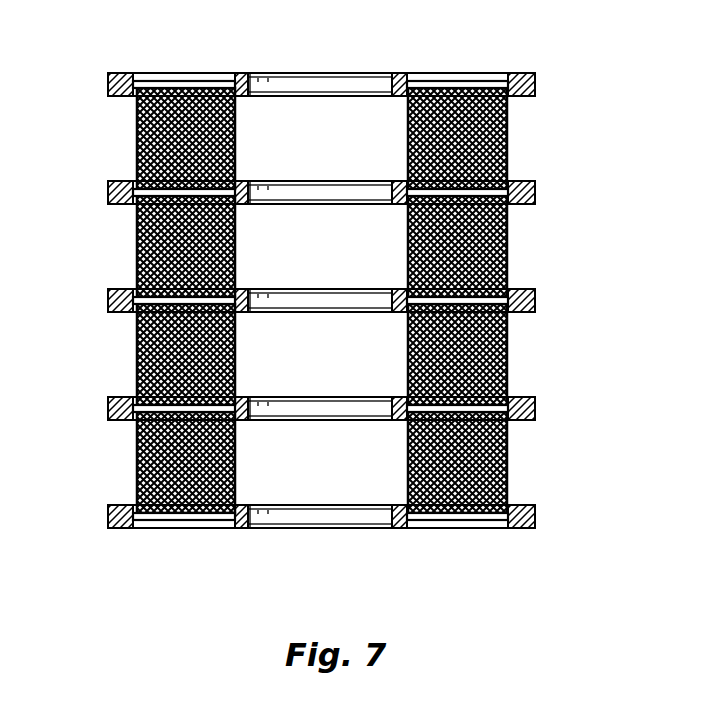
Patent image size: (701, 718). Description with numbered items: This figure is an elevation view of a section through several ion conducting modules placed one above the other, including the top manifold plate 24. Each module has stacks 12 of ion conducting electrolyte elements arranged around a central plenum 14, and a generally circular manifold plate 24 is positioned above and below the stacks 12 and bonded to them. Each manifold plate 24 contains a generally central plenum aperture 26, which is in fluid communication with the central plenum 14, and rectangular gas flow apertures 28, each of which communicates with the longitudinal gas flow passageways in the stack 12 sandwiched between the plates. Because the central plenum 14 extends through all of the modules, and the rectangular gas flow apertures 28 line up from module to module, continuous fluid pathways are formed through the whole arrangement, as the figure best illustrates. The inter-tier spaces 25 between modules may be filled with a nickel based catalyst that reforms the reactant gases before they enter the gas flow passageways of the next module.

The stack 12 is at (137, 245).
The central plenum 14 is at (321, 300).
The manifold plate 24 is at (107, 190).
The inter-tier space 25 is at (165, 185).
The central plenum aperture 26 is at (397, 86).
The rectangular gas flow aperture 28 is at (472, 78).